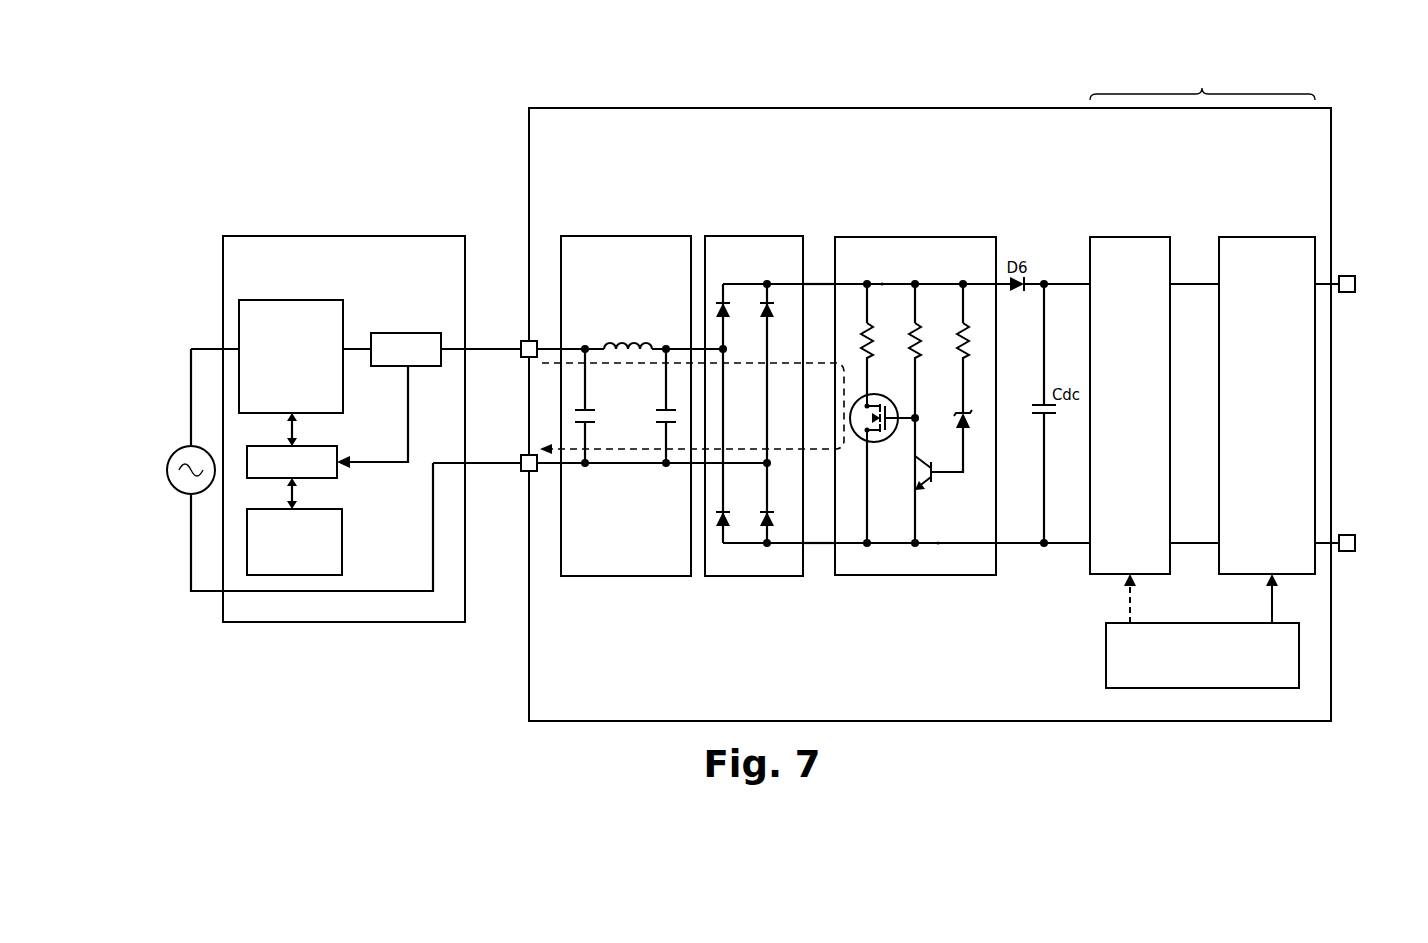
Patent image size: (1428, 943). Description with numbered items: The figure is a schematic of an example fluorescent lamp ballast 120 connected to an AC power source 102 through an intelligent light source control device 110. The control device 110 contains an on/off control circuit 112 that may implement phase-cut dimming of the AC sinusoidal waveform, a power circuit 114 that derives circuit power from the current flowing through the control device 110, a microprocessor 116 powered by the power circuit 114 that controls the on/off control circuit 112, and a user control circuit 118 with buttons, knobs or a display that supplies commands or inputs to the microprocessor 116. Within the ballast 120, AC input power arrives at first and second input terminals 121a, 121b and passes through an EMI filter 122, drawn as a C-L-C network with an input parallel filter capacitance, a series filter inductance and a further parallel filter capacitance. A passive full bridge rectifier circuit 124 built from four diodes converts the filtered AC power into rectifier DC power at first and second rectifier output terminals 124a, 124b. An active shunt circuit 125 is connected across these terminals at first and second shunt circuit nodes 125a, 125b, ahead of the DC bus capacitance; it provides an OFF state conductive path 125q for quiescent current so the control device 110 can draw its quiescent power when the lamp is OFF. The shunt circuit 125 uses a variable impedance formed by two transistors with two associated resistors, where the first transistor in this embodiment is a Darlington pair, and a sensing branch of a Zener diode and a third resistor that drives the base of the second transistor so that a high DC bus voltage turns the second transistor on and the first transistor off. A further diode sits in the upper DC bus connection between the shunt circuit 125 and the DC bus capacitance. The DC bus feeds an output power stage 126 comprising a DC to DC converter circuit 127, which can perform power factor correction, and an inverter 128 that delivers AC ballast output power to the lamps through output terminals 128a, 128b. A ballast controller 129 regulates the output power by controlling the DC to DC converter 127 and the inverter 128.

The AC power source 102 is at (176, 448).
The light source control device 110 is at (223, 258).
The on/off control circuit 112 is at (290, 300).
The power circuit 114 is at (408, 333).
The microprocessor 116 is at (328, 446).
The user control circuit 118 is at (342, 525).
The ballast 120 is at (690, 108).
The first input terminal 121a is at (521, 341).
The second input terminal 121b is at (521, 471).
The EMI filter 122 is at (627, 236).
The rectifier circuit 124 is at (733, 236).
The first rectifier output terminal 124a is at (818, 284).
The second rectifier output terminal 124b is at (818, 543).
The shunt circuit 125 is at (942, 237).
The first shunt circuit node 125a is at (882, 284).
The second shunt circuit node 125b is at (938, 543).
The OFF state conductive path 125q is at (542, 363).
The output power stage 126 is at (1202, 318).
The DC to DC converter circuit 127 is at (1132, 237).
The inverter 128 is at (1270, 237).
The first output terminal 128a is at (1355, 280).
The second output terminal 128b is at (1355, 548).
The ballast controller 129 is at (1106, 656).